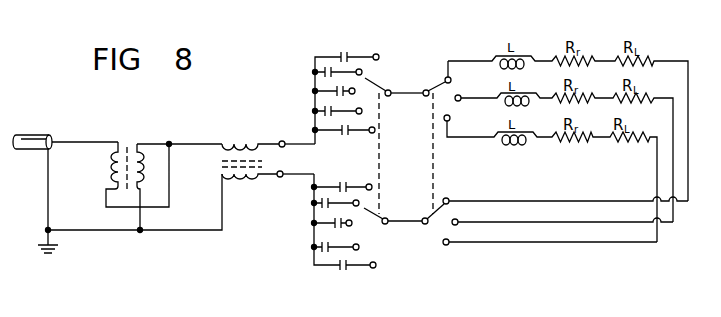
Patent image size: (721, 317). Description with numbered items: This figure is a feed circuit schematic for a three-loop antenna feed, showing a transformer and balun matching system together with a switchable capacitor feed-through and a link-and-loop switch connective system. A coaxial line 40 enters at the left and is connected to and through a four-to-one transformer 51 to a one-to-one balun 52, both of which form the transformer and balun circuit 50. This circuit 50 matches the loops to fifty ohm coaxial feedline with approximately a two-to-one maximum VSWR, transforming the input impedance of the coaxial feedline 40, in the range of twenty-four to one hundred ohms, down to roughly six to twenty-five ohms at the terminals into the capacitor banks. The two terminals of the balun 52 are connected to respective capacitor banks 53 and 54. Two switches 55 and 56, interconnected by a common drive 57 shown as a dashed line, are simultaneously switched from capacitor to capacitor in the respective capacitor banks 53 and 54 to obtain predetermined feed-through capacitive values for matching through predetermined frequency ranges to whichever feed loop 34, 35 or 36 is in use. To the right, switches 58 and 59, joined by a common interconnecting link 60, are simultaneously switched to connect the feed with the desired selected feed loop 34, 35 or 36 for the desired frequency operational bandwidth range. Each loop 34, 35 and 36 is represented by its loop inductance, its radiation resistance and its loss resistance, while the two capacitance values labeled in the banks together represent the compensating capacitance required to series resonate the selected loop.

The coaxial line 40 is at (38, 137).
The transformer and balun circuit 50 is at (164, 203).
The transformer 51 is at (136, 141).
The balun 52 is at (248, 138).
The capacitor bank 53 is at (310, 55).
The capacitor bank 54 is at (303, 228).
The switch 55 is at (366, 79).
The switch 56 is at (365, 210).
The common drive 57 is at (380, 153).
The switch 58 is at (440, 82).
The switch 59 is at (440, 208).
The common interconnecting link 60 is at (435, 157).
The feed loop 34 is at (521, 201).
The feed loop 35 is at (558, 222).
The feed loop 36 is at (508, 244).